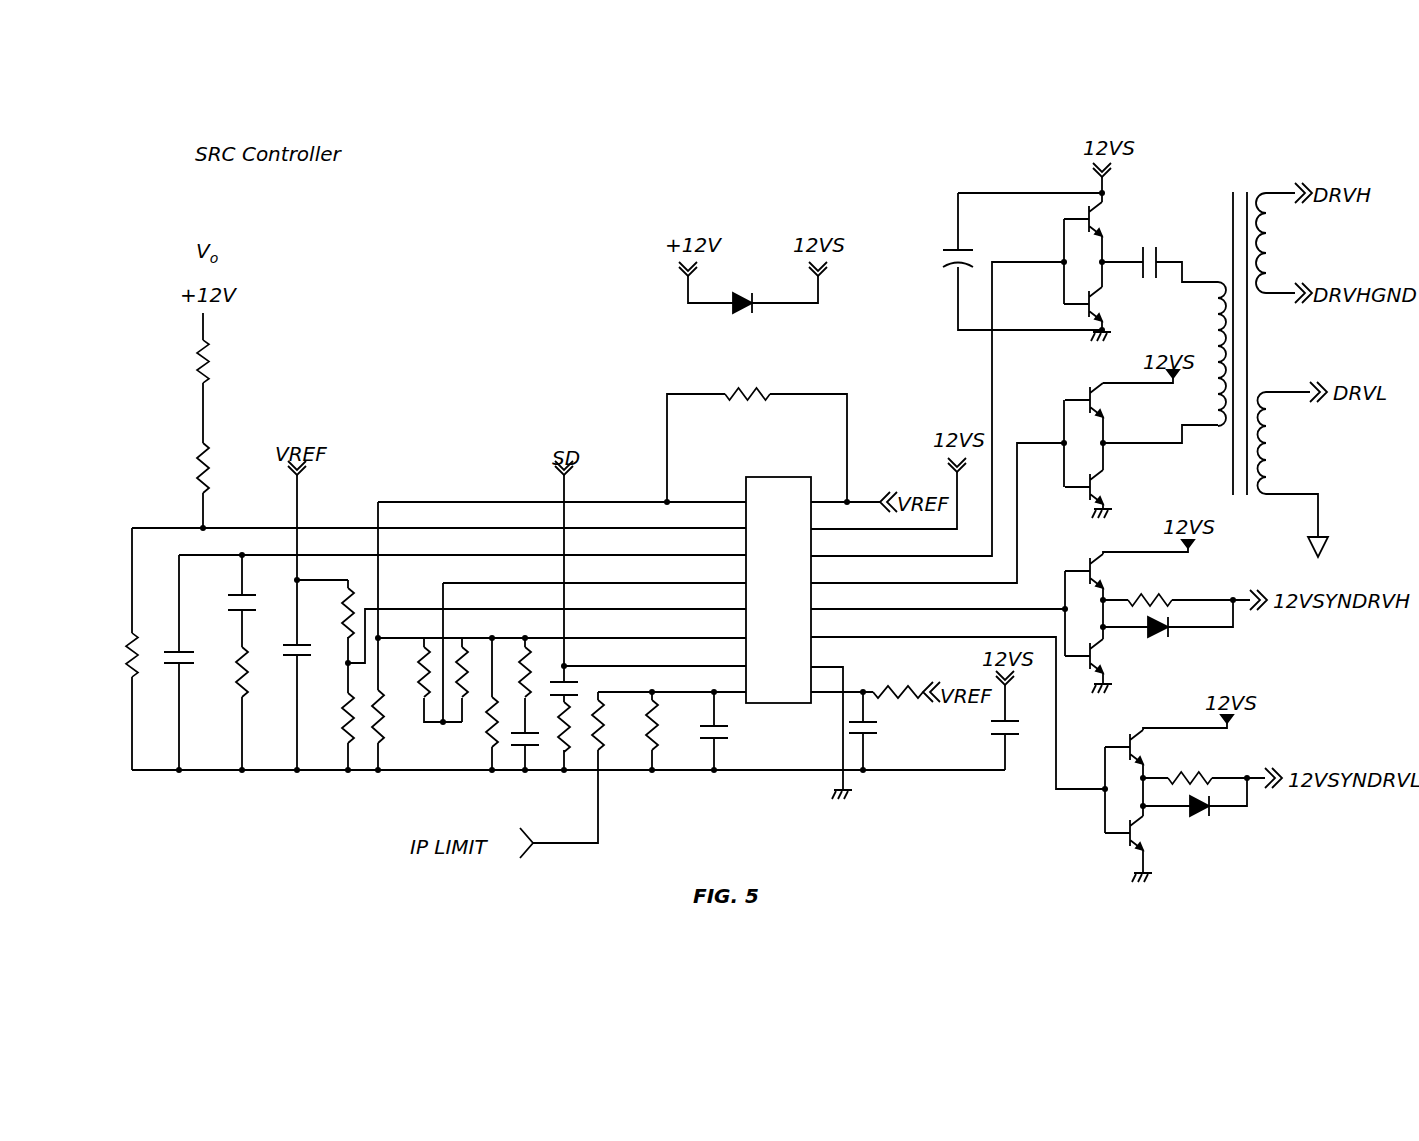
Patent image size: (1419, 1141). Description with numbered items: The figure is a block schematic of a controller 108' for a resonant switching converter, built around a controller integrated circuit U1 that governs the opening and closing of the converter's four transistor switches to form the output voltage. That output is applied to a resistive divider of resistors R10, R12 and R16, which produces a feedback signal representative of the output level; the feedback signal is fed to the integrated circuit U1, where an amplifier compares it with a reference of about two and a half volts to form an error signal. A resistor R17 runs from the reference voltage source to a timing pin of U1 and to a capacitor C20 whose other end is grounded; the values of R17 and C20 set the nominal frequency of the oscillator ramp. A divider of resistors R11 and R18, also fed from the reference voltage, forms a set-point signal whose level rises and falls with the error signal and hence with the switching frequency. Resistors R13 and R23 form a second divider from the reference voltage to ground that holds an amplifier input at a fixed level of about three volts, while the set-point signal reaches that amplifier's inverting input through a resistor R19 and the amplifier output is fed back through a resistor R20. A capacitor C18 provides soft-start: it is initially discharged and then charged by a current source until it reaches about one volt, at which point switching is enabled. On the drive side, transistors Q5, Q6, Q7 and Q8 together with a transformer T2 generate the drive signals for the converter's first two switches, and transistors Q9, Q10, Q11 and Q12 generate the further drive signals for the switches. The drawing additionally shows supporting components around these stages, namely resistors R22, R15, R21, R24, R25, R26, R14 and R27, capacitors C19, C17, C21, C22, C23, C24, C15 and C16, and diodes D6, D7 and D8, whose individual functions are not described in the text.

The controller 108' is at (476, 216).
The resistor R10 is at (229, 361).
The resistor R12 is at (229, 468).
The resistor R16 is at (151, 641).
The capacitor C19 is at (194, 674).
The capacitor C17 is at (258, 588).
The resistor R22 is at (261, 686).
The capacitor C20 is at (312, 665).
The resistor R13 is at (328, 611).
The resistor R23 is at (328, 728).
The resistor R18 is at (380, 708).
The resistor R19 is at (427, 657).
The resistor R20 is at (463, 660).
The resistor R15 is at (529, 656).
The resistor R21 is at (490, 735).
The capacitor C21 is at (534, 748).
The capacitor C18 is at (570, 670).
The resistor R24 is at (572, 705).
The resistor R25 is at (604, 735).
The resistor R26 is at (658, 745).
The capacitor C22 is at (738, 740).
The capacitor C23 is at (880, 743).
The capacitor C24 is at (1020, 715).
The resistor R17 is at (898, 677).
The resistor R11 is at (747, 382).
The controller integrated circuit U1 is at (783, 564).
The diode D6 is at (746, 319).
The capacitor C15 is at (940, 246).
The capacitor C16 is at (1165, 248).
The transistor Q5 is at (1096, 220).
The transistor Q6 is at (1096, 305).
The transistor Q7 is at (1097, 401).
The transistor Q8 is at (1097, 487).
The transistor Q9 is at (1096, 571).
The transistor Q10 is at (1101, 657).
The resistor R14 is at (1152, 587).
The diode D7 is at (1162, 643).
The transistor Q11 is at (1114, 740).
The transistor Q12 is at (1114, 842).
The resistor R27 is at (1192, 765).
The diode D8 is at (1197, 822).
The transformer T2 is at (1242, 328).